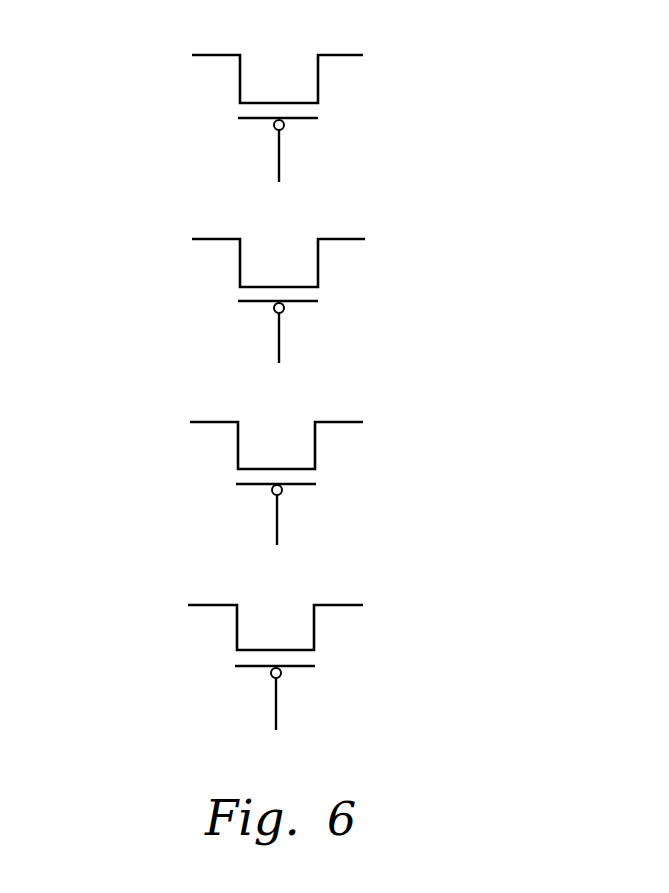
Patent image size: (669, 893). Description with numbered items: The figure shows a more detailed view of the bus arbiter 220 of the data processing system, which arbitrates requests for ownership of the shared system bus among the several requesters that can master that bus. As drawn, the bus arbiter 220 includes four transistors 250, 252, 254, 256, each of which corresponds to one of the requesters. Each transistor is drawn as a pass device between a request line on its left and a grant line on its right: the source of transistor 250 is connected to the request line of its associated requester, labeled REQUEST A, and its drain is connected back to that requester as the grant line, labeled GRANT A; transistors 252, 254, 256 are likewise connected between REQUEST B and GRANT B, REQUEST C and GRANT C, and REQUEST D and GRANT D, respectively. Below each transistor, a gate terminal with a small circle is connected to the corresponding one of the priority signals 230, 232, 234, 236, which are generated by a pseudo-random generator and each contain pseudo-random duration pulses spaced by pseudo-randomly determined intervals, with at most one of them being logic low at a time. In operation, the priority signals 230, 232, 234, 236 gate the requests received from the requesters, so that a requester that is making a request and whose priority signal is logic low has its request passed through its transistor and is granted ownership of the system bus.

The bus arbiter 220 is at (560, 87).
The priority signal 230 is at (279, 163).
The priority signal 232 is at (279, 347).
The priority signal 234 is at (277, 528).
The priority signal 236 is at (276, 711).
The transistor 250 is at (307, 72).
The transistor 252 is at (307, 255).
The transistor 254 is at (305, 438).
The transistor 256 is at (304, 621).